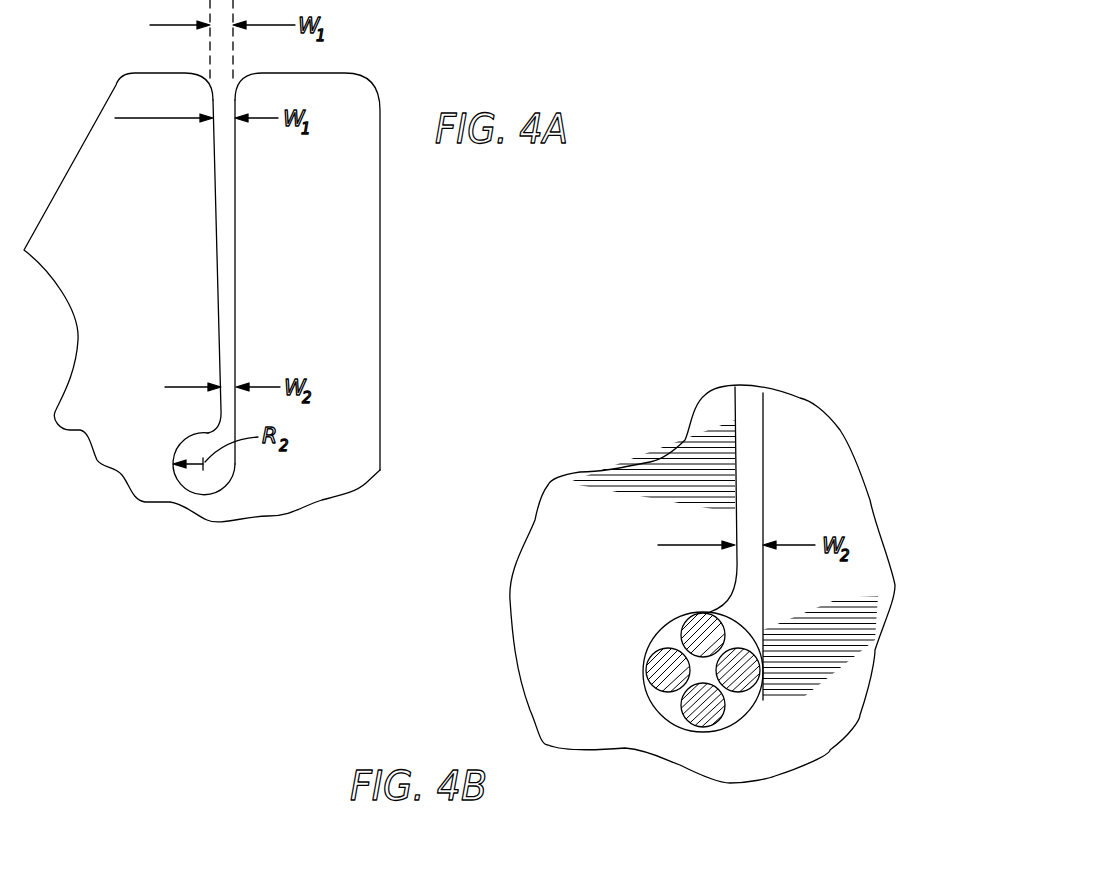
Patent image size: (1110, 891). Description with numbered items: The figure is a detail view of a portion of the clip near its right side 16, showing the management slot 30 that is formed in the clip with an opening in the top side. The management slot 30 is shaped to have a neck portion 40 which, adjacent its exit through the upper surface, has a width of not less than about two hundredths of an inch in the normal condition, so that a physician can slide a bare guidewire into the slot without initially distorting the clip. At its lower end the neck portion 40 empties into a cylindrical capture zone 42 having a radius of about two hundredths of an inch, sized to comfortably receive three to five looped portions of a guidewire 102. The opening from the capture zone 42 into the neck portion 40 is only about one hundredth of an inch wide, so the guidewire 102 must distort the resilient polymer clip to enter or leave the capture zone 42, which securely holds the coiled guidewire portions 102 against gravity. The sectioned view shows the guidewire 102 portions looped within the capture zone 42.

In FIG. 4A, the right side 16 is at (380, 250).
In FIG. 4A, the management slot 30 is at (234, 242).
In FIG. 4B, the management slot 30 is at (763, 505).
In FIG. 4A, the neck portion 40 is at (248, 341).
In FIG. 4B, the neck portion 40 is at (745, 423).
In FIG. 4A, the capture zone 42 is at (222, 482).
In FIG. 4B, the capture zone 42 is at (660, 635).
In FIG. 4B, the guidewire 102 is at (696, 630).